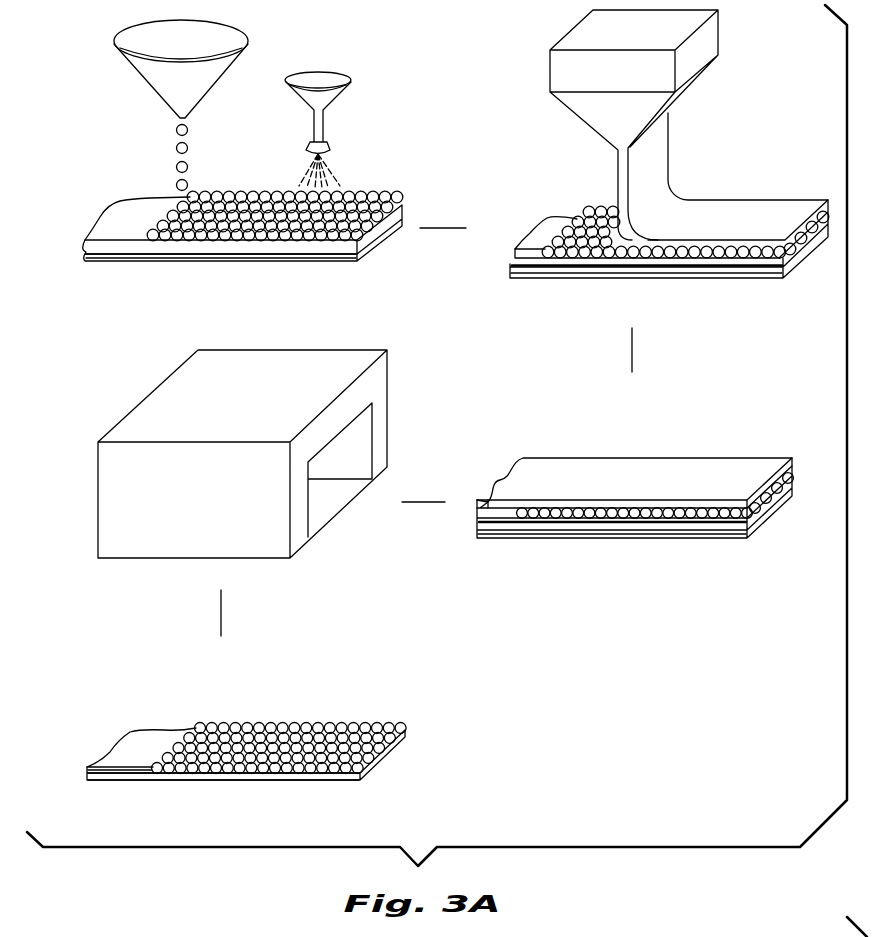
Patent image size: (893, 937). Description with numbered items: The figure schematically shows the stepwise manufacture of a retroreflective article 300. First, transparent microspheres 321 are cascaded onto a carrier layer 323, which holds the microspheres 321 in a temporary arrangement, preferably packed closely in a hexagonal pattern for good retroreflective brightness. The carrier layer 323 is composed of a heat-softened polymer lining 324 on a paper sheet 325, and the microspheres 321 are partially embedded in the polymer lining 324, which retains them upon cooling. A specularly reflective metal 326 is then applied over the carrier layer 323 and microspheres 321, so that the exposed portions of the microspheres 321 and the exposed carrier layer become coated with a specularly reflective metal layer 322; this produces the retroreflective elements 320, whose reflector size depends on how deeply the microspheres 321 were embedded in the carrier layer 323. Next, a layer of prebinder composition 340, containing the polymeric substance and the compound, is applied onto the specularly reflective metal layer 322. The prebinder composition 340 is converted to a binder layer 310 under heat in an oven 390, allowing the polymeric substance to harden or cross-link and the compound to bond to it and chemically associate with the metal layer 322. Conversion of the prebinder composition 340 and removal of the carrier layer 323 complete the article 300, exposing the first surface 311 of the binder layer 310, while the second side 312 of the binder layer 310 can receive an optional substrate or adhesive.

The retroreflective article 300 is at (407, 676).
The binder layer 310 is at (318, 774).
The first surface of binder layer 311 is at (132, 766).
The second side of binder layer 312 is at (218, 781).
The retroreflective elements 320 is at (368, 708).
The transparent microspheres 321 is at (175, 163).
The specularly reflective metal layer 322 is at (537, 232).
The carrier layer 323 is at (115, 210).
The polymer lining 324 is at (316, 246).
The paper sheet 325 is at (114, 262).
The specularly reflective metal 326 is at (336, 178).
The prebinder composition 340 is at (655, 147).
The oven 390 is at (169, 410).